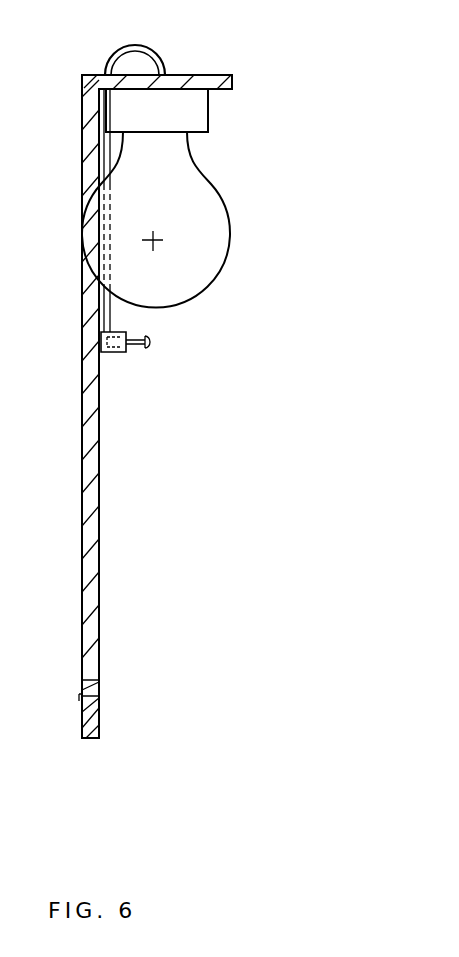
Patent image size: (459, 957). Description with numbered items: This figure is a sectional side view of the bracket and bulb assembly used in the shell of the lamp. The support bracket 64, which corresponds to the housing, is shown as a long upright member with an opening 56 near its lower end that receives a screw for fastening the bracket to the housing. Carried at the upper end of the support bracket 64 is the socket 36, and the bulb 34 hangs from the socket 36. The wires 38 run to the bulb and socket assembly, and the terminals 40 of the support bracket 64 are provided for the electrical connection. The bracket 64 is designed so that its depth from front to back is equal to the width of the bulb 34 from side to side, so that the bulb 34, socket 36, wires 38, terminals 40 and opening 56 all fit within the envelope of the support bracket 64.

The bulb 34 is at (197, 238).
The socket 36 is at (190, 108).
The wires 38 is at (159, 41).
The terminals 40 is at (155, 364).
The opening 56 is at (90, 691).
The support bracket 64 is at (88, 548).